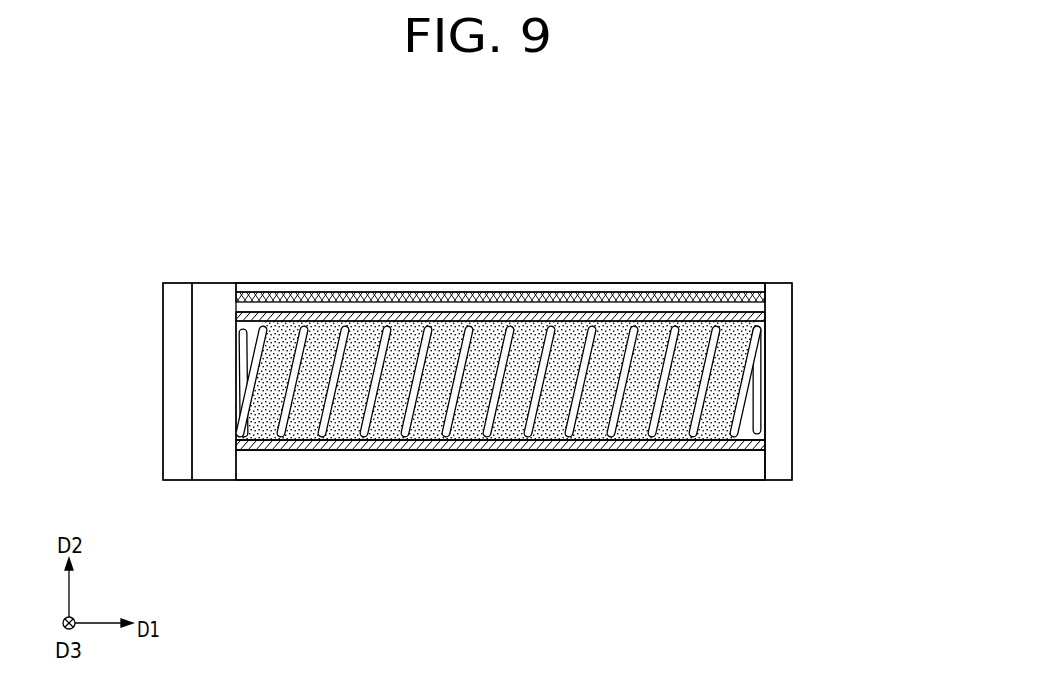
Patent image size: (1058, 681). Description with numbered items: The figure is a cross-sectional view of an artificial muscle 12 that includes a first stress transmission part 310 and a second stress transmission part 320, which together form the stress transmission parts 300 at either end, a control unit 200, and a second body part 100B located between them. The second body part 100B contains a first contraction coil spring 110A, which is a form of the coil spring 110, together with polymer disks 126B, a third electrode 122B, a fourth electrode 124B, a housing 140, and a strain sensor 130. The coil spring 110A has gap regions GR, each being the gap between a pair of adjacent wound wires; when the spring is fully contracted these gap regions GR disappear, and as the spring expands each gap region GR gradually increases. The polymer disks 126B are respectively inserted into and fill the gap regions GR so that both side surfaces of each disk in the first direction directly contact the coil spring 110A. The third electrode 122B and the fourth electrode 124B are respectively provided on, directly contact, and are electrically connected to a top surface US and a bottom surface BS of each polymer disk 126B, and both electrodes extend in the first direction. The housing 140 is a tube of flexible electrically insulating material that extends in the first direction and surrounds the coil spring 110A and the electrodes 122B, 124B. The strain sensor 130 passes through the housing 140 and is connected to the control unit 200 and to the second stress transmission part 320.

The artificial muscle 12 is at (837, 140).
The second body part 100B is at (765, 216).
The first contraction coil spring 110A is at (633, 332).
The display panel 110 is at (500, 382).
The third electrode 122B is at (541, 315).
The fourth electrode 124B is at (468, 451).
The polymer disk 126B is at (544, 441).
The strain sensor 130 is at (475, 297).
The housing 140 is at (409, 288).
The control unit 200 is at (212, 293).
The stress transmission part 300 is at (476, 381).
The first stress transmission part 310 is at (177, 378).
The second stress transmission part 320 is at (778, 379).
The gap region GR is at (607, 412).
The top surface US is at (758, 306).
The bottom surface BS is at (758, 458).